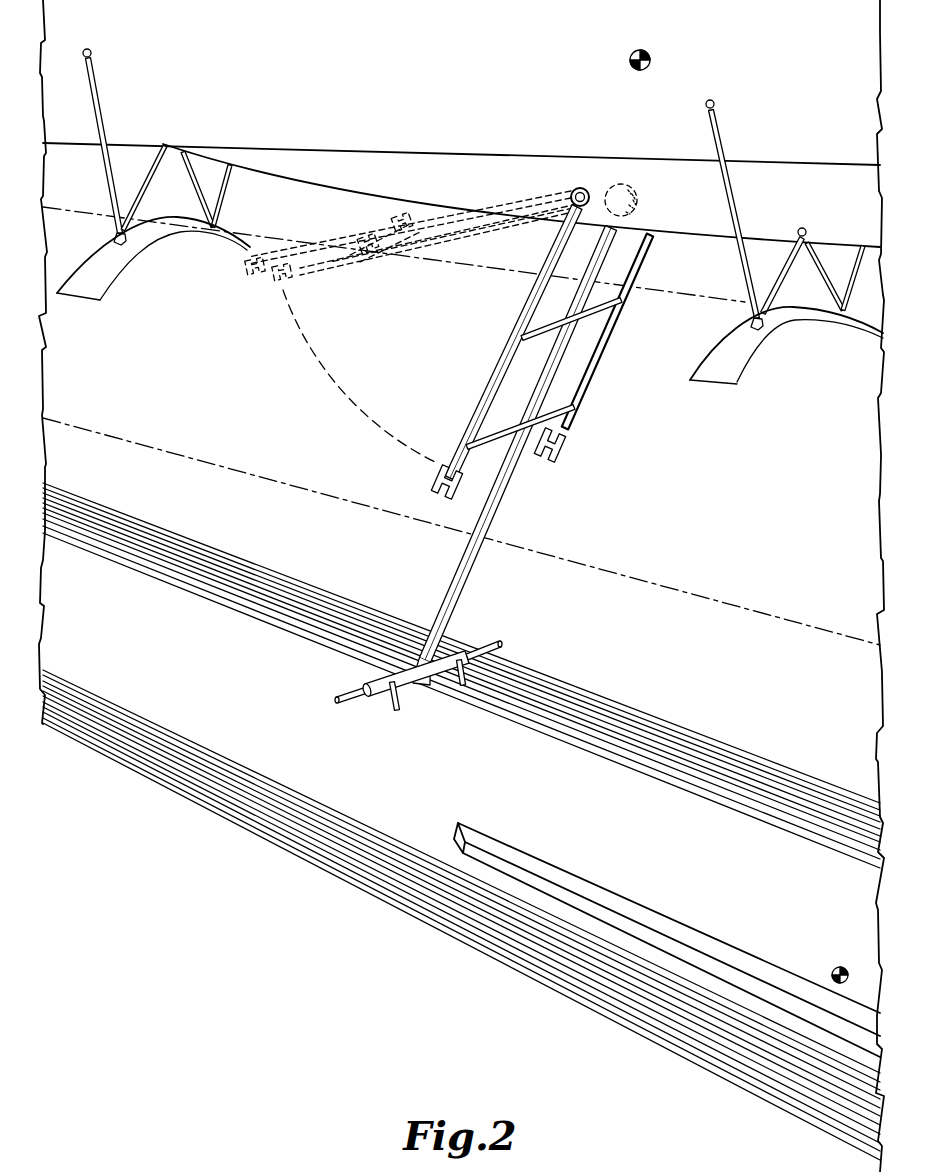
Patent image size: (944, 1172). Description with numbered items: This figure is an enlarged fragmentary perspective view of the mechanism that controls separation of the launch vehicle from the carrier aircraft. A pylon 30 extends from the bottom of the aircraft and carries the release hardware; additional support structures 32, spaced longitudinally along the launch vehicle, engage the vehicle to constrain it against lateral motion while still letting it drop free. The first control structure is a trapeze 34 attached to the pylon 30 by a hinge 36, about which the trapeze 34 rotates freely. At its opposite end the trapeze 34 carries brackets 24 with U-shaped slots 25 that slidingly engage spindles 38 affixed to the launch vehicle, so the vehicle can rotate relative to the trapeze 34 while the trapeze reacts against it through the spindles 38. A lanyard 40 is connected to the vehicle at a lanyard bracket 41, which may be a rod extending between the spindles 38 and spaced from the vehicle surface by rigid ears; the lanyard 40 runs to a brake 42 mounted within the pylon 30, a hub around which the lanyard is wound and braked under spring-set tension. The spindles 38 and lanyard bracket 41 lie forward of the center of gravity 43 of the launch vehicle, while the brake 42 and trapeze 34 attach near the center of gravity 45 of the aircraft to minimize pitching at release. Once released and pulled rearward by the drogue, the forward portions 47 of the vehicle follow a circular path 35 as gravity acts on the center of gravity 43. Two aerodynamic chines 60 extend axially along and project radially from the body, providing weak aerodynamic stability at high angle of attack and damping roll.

The bracket 24 is at (438, 468).
The U-shaped slot 25 is at (548, 462).
The pylon 30 is at (843, 246).
The support structure 32 is at (78, 305).
The trapeze 34 is at (495, 367).
The circular path 35 is at (350, 413).
The hinge 36 is at (578, 188).
The spindle 38 is at (410, 205).
The lanyard 40 is at (474, 564).
The lanyard bracket 41 is at (410, 690).
The brake 42 is at (631, 186).
The center of gravity of the launch vehicle 43 is at (838, 966).
The center of gravity of the aircraft 45 is at (632, 55).
The forward portion 47 is at (262, 679).
The aerodynamic chine 60 is at (648, 915).